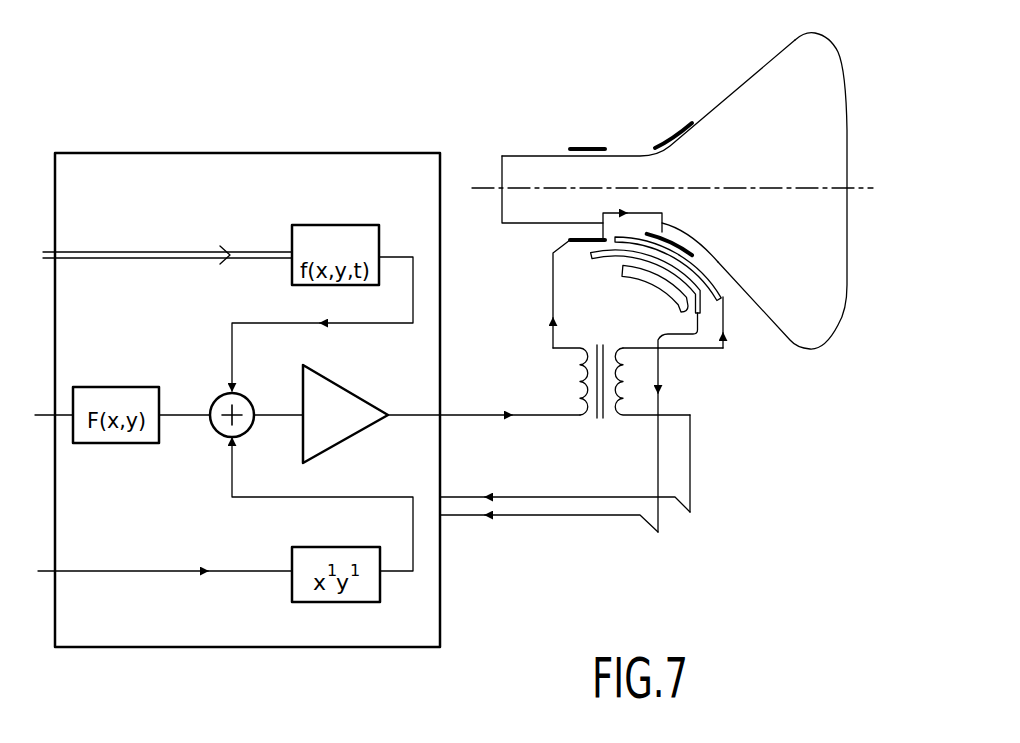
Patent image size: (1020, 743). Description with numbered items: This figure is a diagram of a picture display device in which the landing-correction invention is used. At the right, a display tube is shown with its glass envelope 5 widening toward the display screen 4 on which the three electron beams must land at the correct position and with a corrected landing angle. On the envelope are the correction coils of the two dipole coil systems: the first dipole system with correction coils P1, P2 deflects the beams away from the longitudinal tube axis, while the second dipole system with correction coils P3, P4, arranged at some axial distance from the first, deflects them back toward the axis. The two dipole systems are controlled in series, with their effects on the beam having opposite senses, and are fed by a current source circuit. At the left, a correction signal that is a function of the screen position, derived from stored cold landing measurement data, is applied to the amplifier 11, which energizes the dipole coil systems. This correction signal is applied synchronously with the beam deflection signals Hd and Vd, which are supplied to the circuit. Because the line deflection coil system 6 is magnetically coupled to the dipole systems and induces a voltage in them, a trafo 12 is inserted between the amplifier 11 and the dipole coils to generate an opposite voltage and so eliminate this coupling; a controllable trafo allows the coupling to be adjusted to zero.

The display screen 4 is at (822, 78).
The glass envelope 5 is at (757, 70).
The line deflection coil system 6 is at (718, 288).
The amplifier 11 is at (341, 383).
The trafo 12 is at (580, 380).
The correction coil P1 is at (577, 141).
The correction coil P2 is at (572, 233).
The correction coil P3 is at (680, 130).
The correction coil P4 is at (684, 242).
The field deflection signal Vd is at (658, 561).
The line deflection signal Hd is at (690, 528).